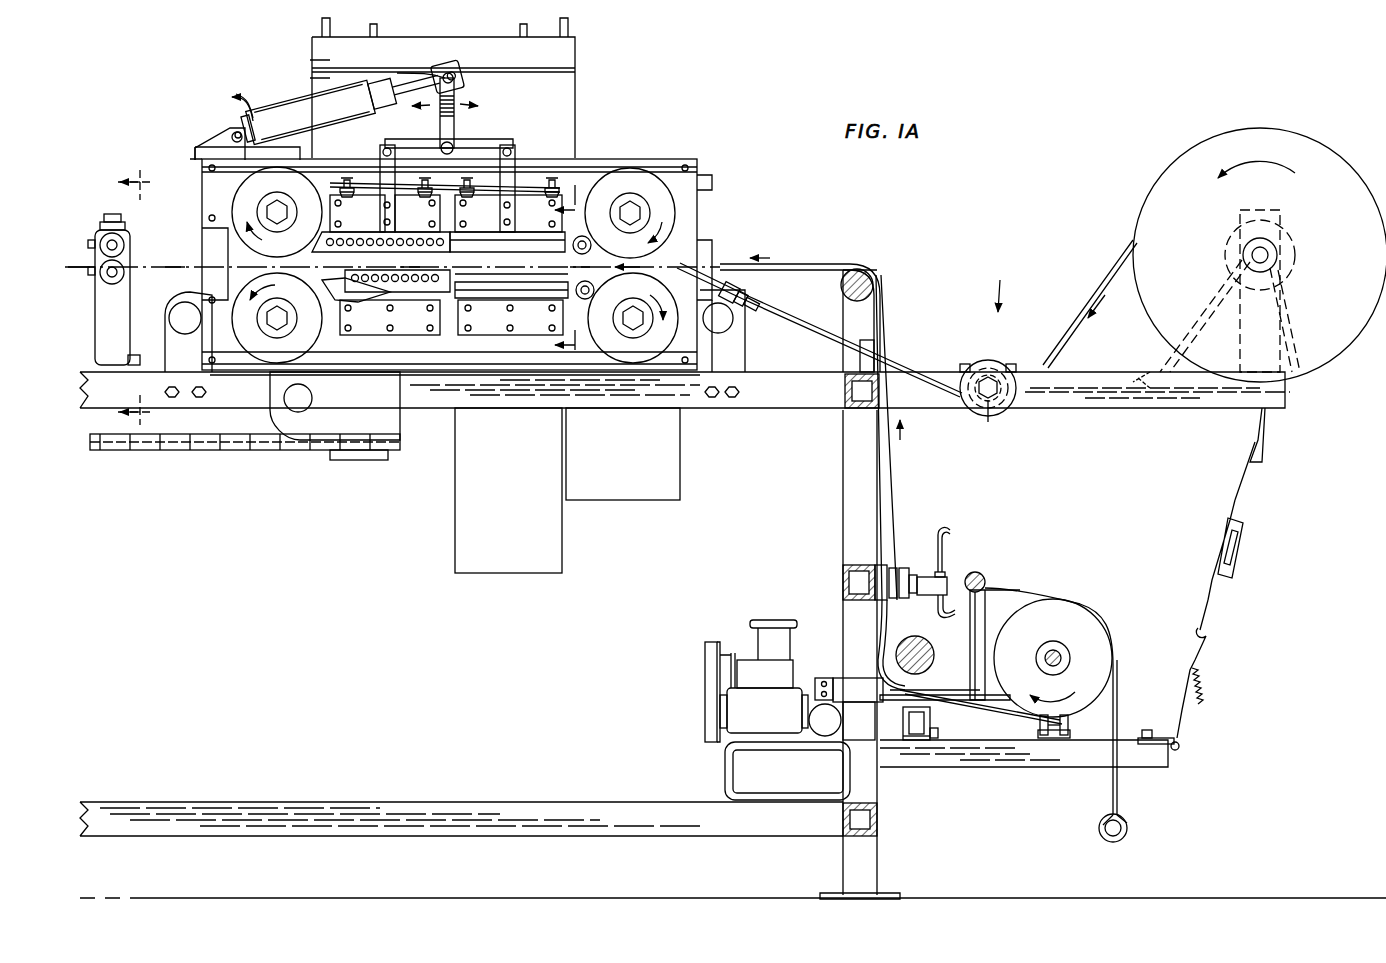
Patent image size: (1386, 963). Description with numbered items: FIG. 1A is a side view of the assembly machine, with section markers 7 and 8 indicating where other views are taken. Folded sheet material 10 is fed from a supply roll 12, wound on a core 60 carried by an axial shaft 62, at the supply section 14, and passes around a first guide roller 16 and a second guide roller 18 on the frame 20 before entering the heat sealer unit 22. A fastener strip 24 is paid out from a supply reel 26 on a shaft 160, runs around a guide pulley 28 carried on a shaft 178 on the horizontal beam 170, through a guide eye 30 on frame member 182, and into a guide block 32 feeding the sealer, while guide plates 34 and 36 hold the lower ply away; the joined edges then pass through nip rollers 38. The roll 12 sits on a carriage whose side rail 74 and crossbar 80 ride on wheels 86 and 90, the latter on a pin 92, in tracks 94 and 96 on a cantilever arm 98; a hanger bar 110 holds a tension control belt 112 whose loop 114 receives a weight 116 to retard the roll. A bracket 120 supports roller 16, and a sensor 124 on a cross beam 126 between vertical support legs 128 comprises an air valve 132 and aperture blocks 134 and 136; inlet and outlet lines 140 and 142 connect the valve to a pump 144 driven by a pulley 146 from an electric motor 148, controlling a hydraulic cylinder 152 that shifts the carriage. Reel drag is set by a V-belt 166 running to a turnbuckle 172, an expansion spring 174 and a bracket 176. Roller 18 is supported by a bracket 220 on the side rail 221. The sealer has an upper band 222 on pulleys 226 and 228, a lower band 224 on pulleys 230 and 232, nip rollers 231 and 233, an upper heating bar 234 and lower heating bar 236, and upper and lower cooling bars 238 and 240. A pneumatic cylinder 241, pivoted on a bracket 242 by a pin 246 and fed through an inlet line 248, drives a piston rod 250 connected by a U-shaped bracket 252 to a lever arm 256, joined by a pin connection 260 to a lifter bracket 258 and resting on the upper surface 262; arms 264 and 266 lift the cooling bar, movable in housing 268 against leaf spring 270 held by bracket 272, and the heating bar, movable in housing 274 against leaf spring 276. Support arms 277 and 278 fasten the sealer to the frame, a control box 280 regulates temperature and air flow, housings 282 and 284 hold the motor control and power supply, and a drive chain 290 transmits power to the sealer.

The section line 7 is at (572, 270).
The section line 8 is at (137, 299).
The folded sheet material 10 is at (895, 488).
The supply reel 12 is at (1077, 620).
The supply section 14 is at (1000, 286).
The first guide roller 16 is at (930, 650).
The second guide roller 18 is at (875, 283).
The frame 20 is at (770, 412).
The first heat sealer unit 22 is at (670, 160).
The fastener strip 24 is at (1092, 286).
The supply reel 26 is at (1252, 142).
The guide pulley 28 is at (990, 362).
The guide eye 30 is at (866, 345).
The guide block 32 is at (755, 297).
The guide plate 34 is at (530, 298).
The guide plate 36 is at (322, 300).
The nip rollers 38 is at (128, 258).
The core 60 is at (1051, 641).
The axial shaft 62 is at (1062, 652).
The side rail 74 is at (975, 702).
The crossbar 80 is at (885, 685).
The wheel 86 is at (1054, 738).
The wheel 90 is at (914, 736).
The pin 92 is at (890, 722).
The track 94 is at (1072, 735).
The track 96 is at (935, 733).
The cantilever arm 98 is at (1012, 758).
The hanger bar 110 is at (982, 612).
The tension control belt 112 is at (1118, 690).
The loop 114 is at (1120, 815).
The weight 116 is at (1127, 828).
The bracket 120 is at (940, 675).
The sensor 124 is at (908, 560).
The cross beam 126 is at (843, 583).
The vertical support leg 128 is at (843, 478).
The air valve 132 is at (938, 580).
The aperture block 134 is at (884, 630).
The aperture block 136 is at (880, 570).
The inlet line 140 is at (950, 534).
The outlet line 142 is at (940, 616).
The pump 144 is at (790, 672).
The pulley 146 is at (705, 660).
The electric motor 148 is at (764, 710).
The hydraulic cylinder 152 is at (825, 726).
The shaft 160 is at (1268, 252).
The V-belt 166 is at (1258, 428).
The horizontal beam 170 is at (1115, 400).
The turnbuckle 172 is at (1233, 560).
The expansion spring 174 is at (1216, 669).
The bracket 176 is at (1185, 738).
The shaft 178 is at (985, 422).
The frame member 182 is at (845, 391).
The bracket 220 is at (848, 308).
The side rail 221 is at (502, 395).
The upper stainless steel band 222 is at (602, 172).
The lower stainless steel band 224 is at (470, 364).
The first pulley 226 is at (277, 212).
The second pulley 228 is at (630, 213).
The first pulley 230 is at (277, 318).
The nip roller 231 is at (591, 245).
The second pulley 232 is at (633, 318).
The nip roller 233 is at (594, 291).
The upper heating bar 234 is at (515, 250).
The lower heating bar 236 is at (500, 284).
The upper cooling bar 238 is at (382, 250).
The lower cooling bar 240 is at (395, 302).
The pneumatic cylinder 241 is at (290, 115).
The bracket 242 is at (215, 143).
The pin 246 is at (233, 132).
The pneumatic inlet line 248 is at (240, 92).
The piston rod 250 is at (415, 78).
The U-shaped bracket 252 is at (455, 75).
The lever arm 256 is at (455, 95).
The lifter bracket 258 is at (415, 145).
The pin connection 260 is at (455, 145).
The upper surface 262 is at (310, 170).
The arm 264 is at (380, 150).
The arm 266 is at (513, 150).
The housing 268 is at (357, 213).
The leaf spring 270 is at (345, 184).
The bracket 272 is at (417, 213).
The housing 274 is at (508, 213).
The leaf spring 276 is at (536, 182).
The support arm 277 is at (722, 320).
The support arm 278 is at (187, 316).
The control box 280 is at (575, 57).
The housing 282 is at (508, 490).
The housing 284 is at (623, 454).
The drive chain 290 is at (220, 450).